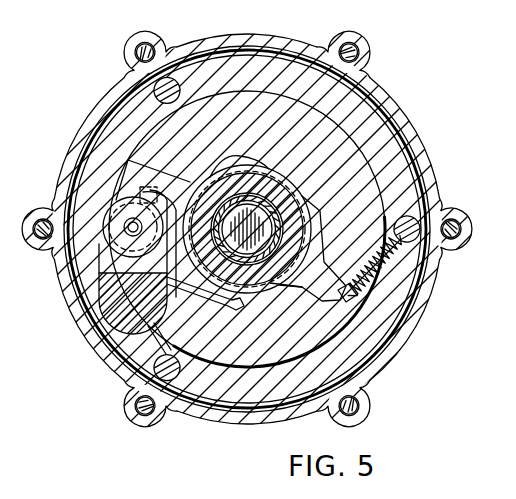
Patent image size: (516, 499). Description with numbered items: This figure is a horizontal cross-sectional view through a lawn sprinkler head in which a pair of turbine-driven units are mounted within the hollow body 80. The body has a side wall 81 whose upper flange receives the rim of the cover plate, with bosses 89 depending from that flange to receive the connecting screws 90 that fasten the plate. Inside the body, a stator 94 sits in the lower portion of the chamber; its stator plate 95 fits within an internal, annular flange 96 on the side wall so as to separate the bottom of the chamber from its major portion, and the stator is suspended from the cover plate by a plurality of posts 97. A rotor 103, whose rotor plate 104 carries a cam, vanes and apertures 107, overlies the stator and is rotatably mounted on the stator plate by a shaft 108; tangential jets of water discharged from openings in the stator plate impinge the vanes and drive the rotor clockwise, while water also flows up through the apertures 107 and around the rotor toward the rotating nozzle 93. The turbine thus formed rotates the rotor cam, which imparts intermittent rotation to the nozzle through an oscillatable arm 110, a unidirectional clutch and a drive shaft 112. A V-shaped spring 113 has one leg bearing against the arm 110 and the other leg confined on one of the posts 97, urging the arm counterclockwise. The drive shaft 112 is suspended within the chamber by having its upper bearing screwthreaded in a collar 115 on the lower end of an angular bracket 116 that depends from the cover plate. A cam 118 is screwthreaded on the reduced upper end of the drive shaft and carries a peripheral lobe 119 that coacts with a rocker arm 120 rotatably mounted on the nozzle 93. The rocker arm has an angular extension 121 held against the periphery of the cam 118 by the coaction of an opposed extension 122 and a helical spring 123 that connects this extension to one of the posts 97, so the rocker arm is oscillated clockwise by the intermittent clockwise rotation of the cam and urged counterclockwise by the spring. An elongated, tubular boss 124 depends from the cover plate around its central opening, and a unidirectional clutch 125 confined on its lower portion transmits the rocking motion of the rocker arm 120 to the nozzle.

The hollow body 80 is at (418, 137).
The side wall 81 is at (282, 34).
The bosses 89 is at (130, 52).
The connecting screws 90 is at (358, 401).
The rotating nozzle 93 is at (287, 213).
The stator 94 is at (367, 92).
The stator plate 95 is at (117, 116).
The internal annular flange 96 is at (207, 418).
The posts 97 is at (408, 216).
The rotor 103 is at (285, 366).
The rotor plate 104 is at (258, 96).
The apertures 107 is at (296, 188).
The shaft 108 is at (268, 233).
The oscillatable arm 110 is at (240, 305).
The drive shaft 112 is at (130, 222).
The V-shaped spring 113 is at (173, 348).
The collar 115 is at (110, 256).
The angular bracket 116 is at (164, 318).
The cam 118 is at (116, 232).
The peripheral lobe 119 is at (158, 193).
The rocker arm 120 is at (228, 150).
The angular extension 121 is at (172, 178).
The opposed extension 122 is at (332, 304).
The helical spring 123 is at (372, 252).
The tubular boss 124 is at (268, 173).
The unidirectional clutch 125 is at (282, 287).